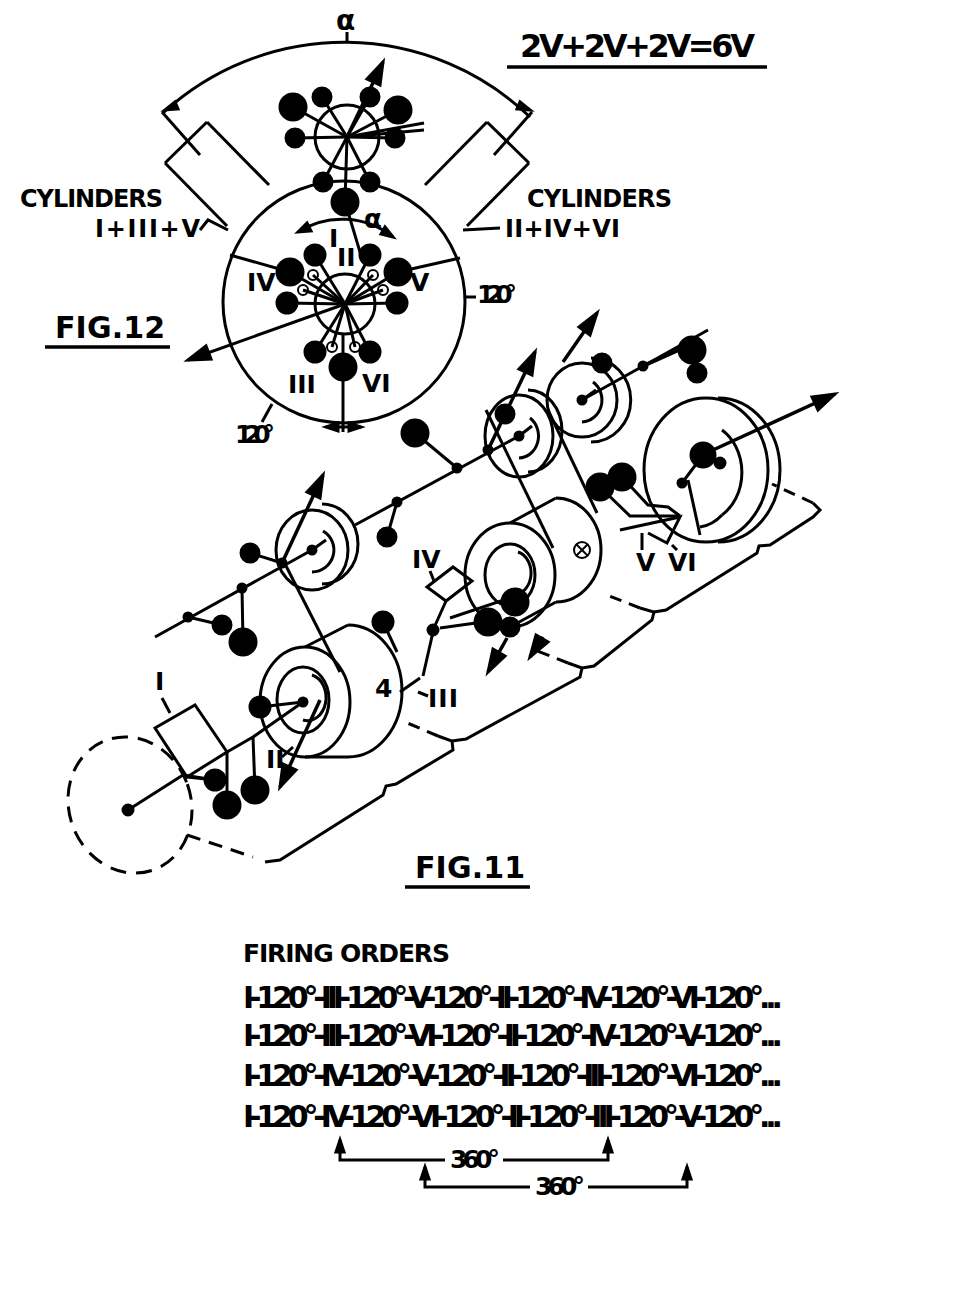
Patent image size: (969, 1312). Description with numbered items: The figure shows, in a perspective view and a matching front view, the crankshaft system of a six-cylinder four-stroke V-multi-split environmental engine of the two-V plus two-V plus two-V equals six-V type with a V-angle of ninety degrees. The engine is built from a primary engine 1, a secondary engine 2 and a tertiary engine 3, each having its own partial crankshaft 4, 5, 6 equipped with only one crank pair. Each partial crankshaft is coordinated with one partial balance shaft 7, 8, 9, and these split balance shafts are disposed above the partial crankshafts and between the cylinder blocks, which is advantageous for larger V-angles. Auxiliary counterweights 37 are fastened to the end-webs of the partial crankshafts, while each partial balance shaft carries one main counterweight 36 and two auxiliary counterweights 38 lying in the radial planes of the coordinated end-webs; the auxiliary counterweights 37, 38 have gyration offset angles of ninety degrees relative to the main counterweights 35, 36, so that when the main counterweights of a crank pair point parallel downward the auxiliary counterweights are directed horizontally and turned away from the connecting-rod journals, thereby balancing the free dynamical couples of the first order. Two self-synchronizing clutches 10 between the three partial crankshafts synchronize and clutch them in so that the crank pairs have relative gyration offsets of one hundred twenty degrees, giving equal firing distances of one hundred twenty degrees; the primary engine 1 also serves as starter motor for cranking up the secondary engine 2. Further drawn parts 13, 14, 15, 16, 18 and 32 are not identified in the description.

In FIG. 11, the primary engine 1 is at (760, 554).
In FIG. 11, the secondary engine 2 is at (582, 669).
In FIG. 11, the tertiary engine 3 is at (385, 800).
In FIG. 12, the partial crankshaft 4 is at (363, 343).
In FIG. 11, the partial crankshaft 4 is at (693, 489).
In FIG. 12, the partial crankshaft 5 is at (343, 294).
In FIG. 11, the partial crankshaft 5 is at (446, 620).
In FIG. 12, the partial crankshaft 6 is at (343, 328).
In FIG. 11, the partial crankshaft 6 is at (240, 745).
In FIG. 12, the partial balance shaft 7 is at (417, 118).
In FIG. 11, the partial balance shaft 7 is at (668, 352).
In FIG. 12, the partial balance shaft 8 is at (385, 133).
In FIG. 11, the partial balance shaft 8 is at (426, 487).
In FIG. 12, the partial balance shaft 9 is at (371, 137).
In FIG. 11, the partial balance shaft 9 is at (221, 600).
In FIG. 11, the self-synchronizing clutch 10 is at (300, 645).
In FIG. 12, the drive shaft 13 is at (245, 357).
In FIG. 11, the drive shaft 13 is at (580, 457).
In FIG. 12, the drive shaft 14 is at (316, 303).
In FIG. 11, the drive shaft 14 is at (509, 489).
In FIG. 12, the drive shaft 15 is at (371, 303).
In FIG. 11, the drive shaft 15 is at (308, 606).
In FIG. 11, the output gear wheel 16 is at (735, 416).
In FIG. 11, the flywheel 18 is at (106, 868).
In FIG. 11, the output shaft 32 is at (787, 434).
In FIG. 12, the main counterweight 35 is at (277, 272).
In FIG. 11, the main counterweight 35 is at (655, 458).
In FIG. 12, the main counterweight 36 is at (283, 104).
In FIG. 11, the main counterweight 36 is at (231, 651).
In FIG. 12, the auxiliary counterweight 37 is at (303, 252).
In FIG. 11, the auxiliary counterweight 37 is at (211, 772).
In FIG. 12, the auxiliary counterweight 38 is at (393, 170).
In FIG. 11, the auxiliary counterweight 38 is at (716, 373).